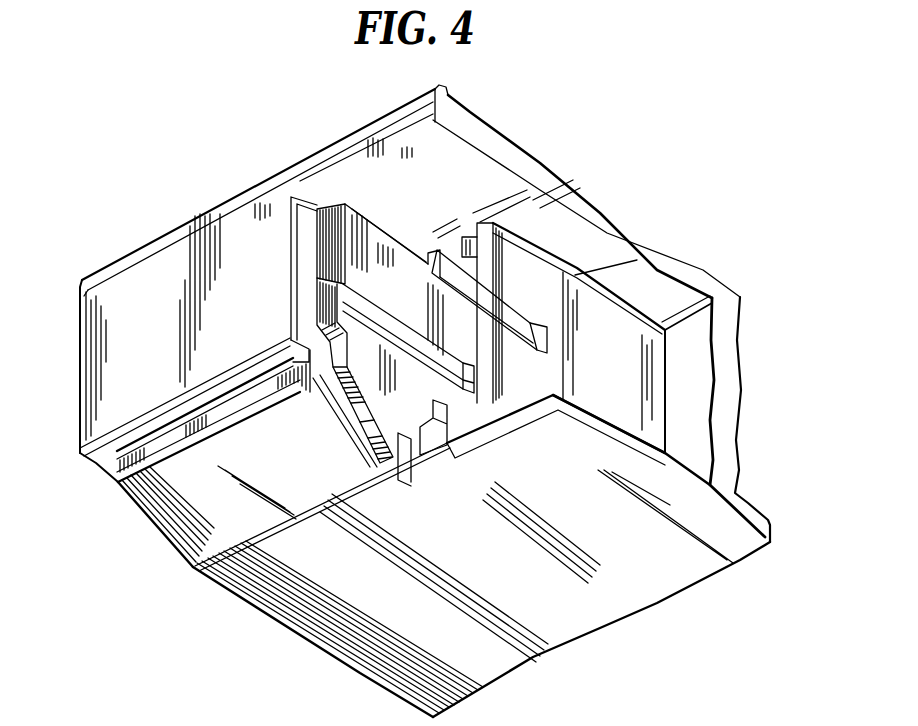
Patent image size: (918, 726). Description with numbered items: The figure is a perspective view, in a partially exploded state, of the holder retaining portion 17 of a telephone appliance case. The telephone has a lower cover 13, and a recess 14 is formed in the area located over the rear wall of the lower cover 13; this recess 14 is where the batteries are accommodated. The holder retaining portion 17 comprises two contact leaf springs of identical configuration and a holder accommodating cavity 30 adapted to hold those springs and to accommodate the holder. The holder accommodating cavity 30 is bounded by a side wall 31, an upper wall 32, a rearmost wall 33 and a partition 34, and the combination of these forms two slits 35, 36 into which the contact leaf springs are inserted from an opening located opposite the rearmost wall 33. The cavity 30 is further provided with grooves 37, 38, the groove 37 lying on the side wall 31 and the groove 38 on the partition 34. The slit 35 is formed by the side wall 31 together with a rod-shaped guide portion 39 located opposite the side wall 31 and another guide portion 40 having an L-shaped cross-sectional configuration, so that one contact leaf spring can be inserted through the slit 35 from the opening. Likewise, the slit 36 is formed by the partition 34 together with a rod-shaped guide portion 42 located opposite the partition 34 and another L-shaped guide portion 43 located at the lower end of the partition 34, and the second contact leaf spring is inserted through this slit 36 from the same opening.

The lower cover 13 is at (110, 408).
The recess 14 is at (343, 205).
The holder retaining portion 17 is at (627, 380).
The holder accommodating cavity 30 is at (447, 325).
The side wall 31 is at (398, 194).
The upper wall 32 is at (592, 252).
The rearmost wall 33 is at (698, 350).
The partition 34 is at (520, 384).
The slit 35 is at (419, 268).
The slit 36 is at (467, 230).
The groove 37 is at (322, 297).
The groove 38 is at (547, 324).
The rod-shaped guide portion 39 is at (438, 262).
The guide portion 40 is at (425, 466).
The rod-shaped guide portion 42 is at (473, 250).
The guide portion 43 is at (452, 387).